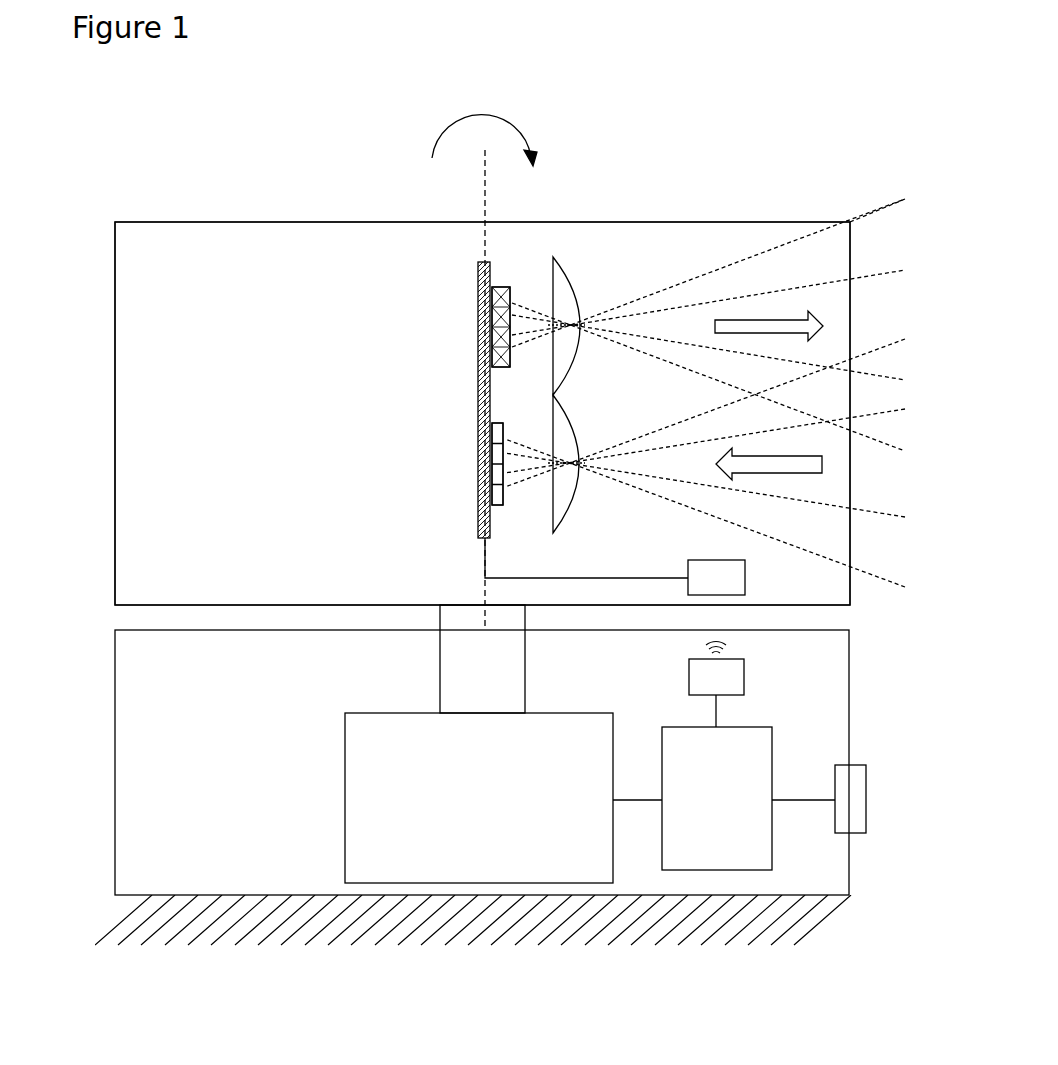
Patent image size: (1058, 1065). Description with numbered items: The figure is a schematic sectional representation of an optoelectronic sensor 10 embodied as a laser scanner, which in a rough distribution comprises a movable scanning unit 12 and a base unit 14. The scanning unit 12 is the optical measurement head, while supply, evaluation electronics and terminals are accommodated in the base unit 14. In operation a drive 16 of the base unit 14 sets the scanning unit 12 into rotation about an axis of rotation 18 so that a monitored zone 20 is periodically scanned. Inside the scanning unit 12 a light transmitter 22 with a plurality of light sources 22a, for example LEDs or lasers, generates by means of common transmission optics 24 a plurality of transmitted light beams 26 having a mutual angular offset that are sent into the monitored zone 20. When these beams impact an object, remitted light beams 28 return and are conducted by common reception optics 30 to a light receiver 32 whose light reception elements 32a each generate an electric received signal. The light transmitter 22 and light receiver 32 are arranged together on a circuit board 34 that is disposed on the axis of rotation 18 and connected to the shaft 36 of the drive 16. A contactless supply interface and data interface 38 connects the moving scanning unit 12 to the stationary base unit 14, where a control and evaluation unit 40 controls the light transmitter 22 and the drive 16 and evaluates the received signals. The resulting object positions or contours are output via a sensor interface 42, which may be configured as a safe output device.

The optoelectronic sensor 10 is at (482, 360).
The scanning unit 12 is at (446, 402).
The base unit 14 is at (447, 787).
The drive 16 is at (463, 798).
The axis of rotation 18 is at (468, 372).
The monitored zone 20 is at (887, 170).
The light transmitter 22 is at (460, 327).
The light sources 22a is at (521, 298).
The common transmission optics 24 is at (590, 318).
The transmitted light beams 26 is at (736, 325).
The remitted light beams 28 is at (732, 463).
The common reception optics 30 is at (590, 471).
The light receiver 32 is at (456, 464).
The light reception elements 32a is at (521, 499).
The circuit board 34 is at (535, 420).
The shaft 36 is at (444, 659).
The contactless supply interface and data interface 38 is at (671, 643).
The control and evaluation unit 40 is at (748, 807).
The sensor interface 42 is at (881, 825).